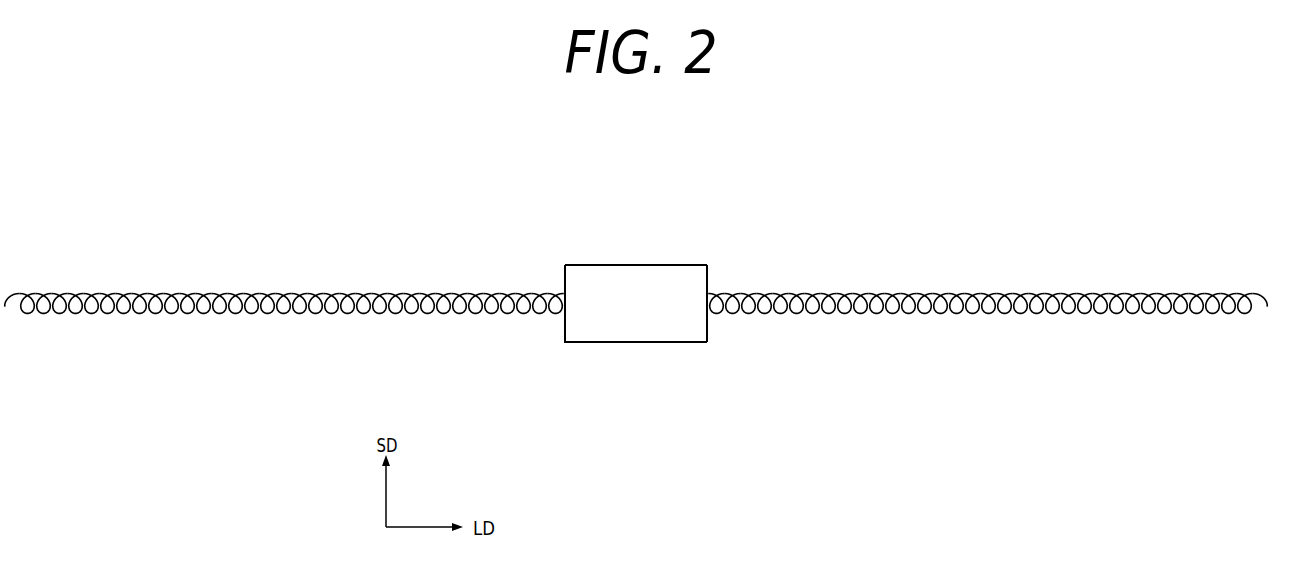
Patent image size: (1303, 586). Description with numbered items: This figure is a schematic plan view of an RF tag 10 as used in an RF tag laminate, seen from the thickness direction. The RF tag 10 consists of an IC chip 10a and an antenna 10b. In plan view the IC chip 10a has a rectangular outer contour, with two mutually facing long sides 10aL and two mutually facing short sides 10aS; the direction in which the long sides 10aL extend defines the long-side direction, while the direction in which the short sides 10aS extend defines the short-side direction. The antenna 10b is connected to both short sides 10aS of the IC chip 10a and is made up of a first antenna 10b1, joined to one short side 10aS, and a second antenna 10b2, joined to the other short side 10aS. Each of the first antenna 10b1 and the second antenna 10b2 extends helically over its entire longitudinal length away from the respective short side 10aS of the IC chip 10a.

The RF tag 10 is at (627, 252).
The IC chip 10a is at (642, 322).
The long side 10aL is at (660, 265).
The short side 10aS is at (707, 330).
The antenna 10b is at (636, 263).
The first antenna 10b1 is at (261, 295).
The second antenna 10b2 is at (1012, 295).